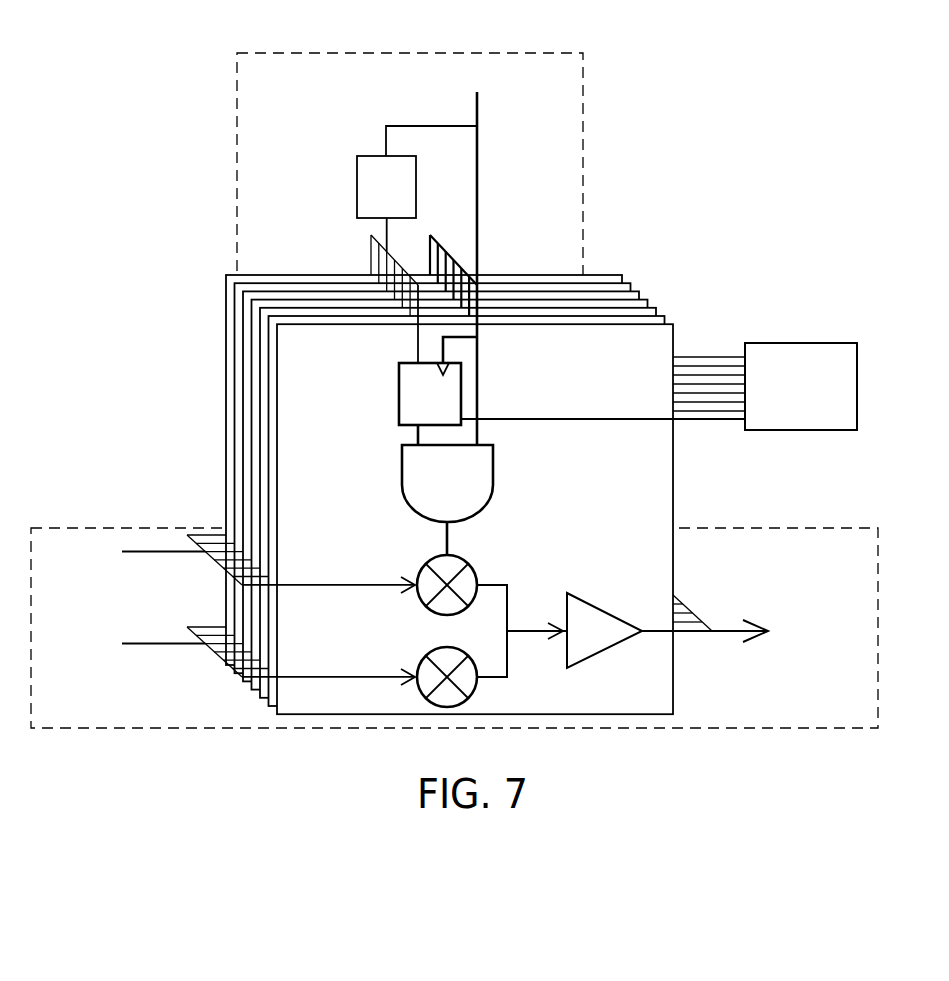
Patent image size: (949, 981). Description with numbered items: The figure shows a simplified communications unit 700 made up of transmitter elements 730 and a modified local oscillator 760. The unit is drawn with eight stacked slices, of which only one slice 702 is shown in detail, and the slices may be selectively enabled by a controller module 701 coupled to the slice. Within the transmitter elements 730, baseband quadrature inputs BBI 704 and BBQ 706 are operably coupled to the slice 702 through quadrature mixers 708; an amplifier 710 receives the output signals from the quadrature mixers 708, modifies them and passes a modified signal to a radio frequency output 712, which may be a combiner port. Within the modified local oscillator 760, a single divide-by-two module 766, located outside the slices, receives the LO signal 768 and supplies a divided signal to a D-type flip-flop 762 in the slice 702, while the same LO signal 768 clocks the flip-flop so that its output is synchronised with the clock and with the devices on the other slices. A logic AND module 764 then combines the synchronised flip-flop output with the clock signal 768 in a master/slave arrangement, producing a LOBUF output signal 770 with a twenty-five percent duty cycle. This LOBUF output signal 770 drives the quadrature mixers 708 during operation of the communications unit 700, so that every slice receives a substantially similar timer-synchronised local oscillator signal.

The communications unit 700 is at (824, 104).
The controller module 701 is at (857, 383).
The slice 702 is at (673, 478).
The baseband quadrature input BBI 704 is at (159, 557).
The baseband quadrature input BBQ 706 is at (159, 648).
The quadrature mixers 708 is at (424, 606).
The amplifier 710 is at (598, 608).
The radio frequency output (RFO) 712 is at (725, 637).
The transmitter elements 730 is at (878, 603).
The modified local oscillator 760 is at (583, 128).
The D-type flip-flop 762 is at (399, 389).
The logic AND module 764 is at (402, 463).
The divide-by-2 module 766 is at (357, 170).
The LO signal 768 is at (479, 117).
The LOBUF output signal 770 is at (445, 535).